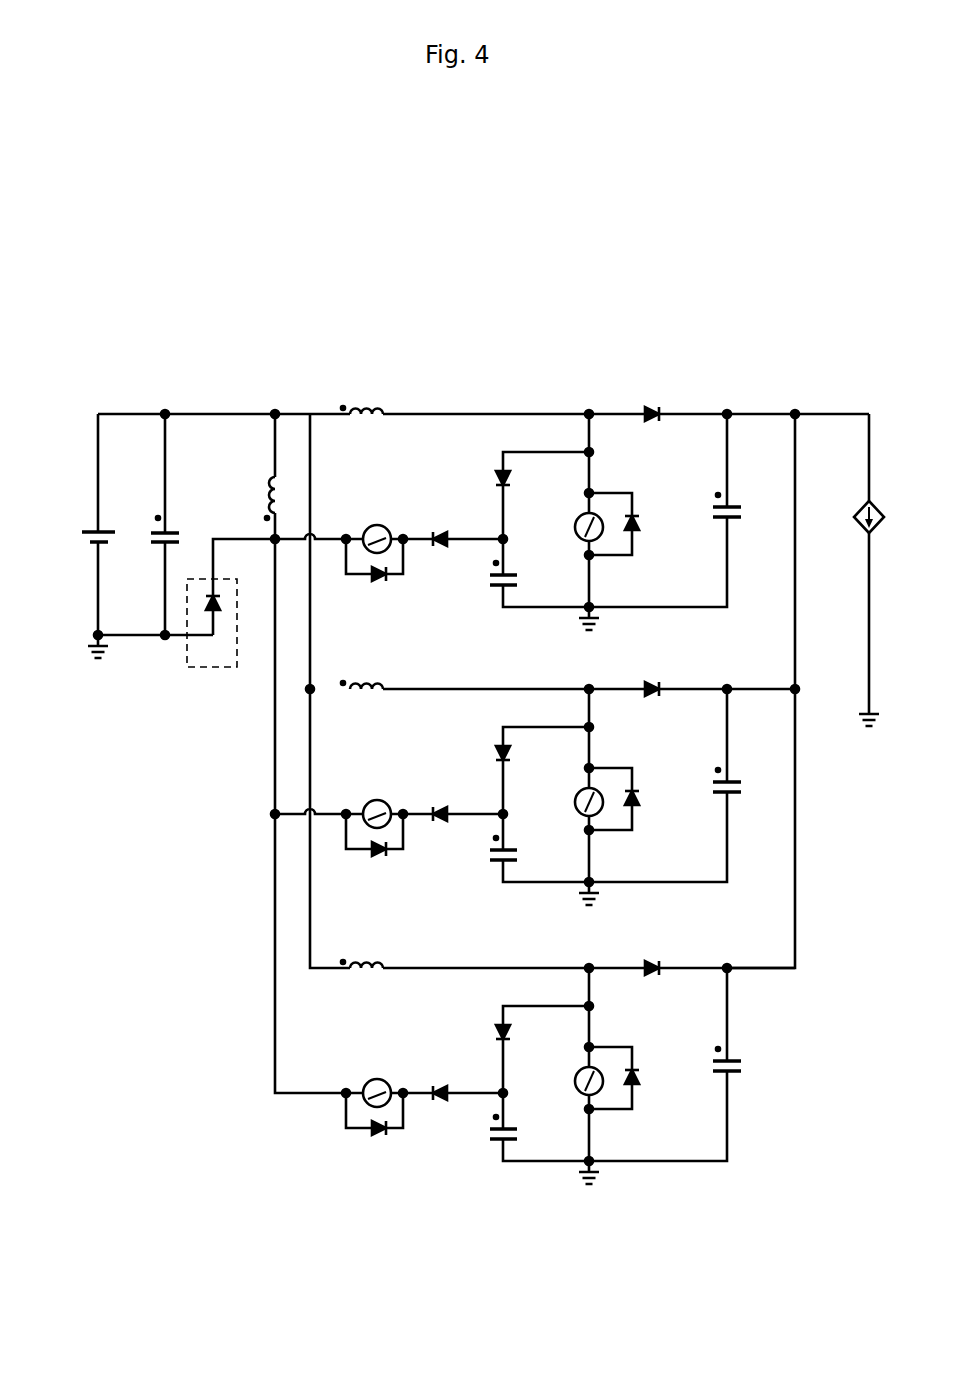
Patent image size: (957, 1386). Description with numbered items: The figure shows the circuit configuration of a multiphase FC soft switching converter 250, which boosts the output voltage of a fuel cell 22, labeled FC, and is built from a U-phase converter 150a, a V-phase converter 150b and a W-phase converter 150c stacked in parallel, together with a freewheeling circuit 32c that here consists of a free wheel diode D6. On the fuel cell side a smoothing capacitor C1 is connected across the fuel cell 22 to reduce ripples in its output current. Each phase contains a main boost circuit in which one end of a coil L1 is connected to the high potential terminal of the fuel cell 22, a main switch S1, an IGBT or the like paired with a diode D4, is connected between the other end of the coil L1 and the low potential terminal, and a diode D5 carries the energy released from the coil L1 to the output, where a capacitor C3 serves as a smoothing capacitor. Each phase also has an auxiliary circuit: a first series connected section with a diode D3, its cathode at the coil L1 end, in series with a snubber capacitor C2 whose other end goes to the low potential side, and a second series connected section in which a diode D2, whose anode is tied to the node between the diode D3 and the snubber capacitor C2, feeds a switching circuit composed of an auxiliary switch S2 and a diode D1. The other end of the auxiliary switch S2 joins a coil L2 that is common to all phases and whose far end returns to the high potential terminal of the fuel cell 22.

The multiphase FC soft switching converter 250 is at (328, 245).
The U-phase converter 150a is at (630, 274).
The V-phase converter 150b is at (618, 655).
The W-phase converter 150c is at (618, 929).
The fuel cell 22 is at (80, 560).
The fuel cell FC is at (80, 535).
The freewheeling circuit 32c is at (177, 662).
The smoothing capacitor C1 is at (173, 530).
The snubber capacitor C2 is at (500, 587).
The capacitor C3 is at (716, 519).
The coil L1 is at (384, 411).
The coil L2 is at (268, 480).
The diode D1 is at (380, 581).
The diode D2 is at (438, 532).
The diode D3 is at (508, 487).
The diode D4 is at (641, 516).
The diode D5 is at (657, 410).
The free wheel diode D6 is at (206, 601).
The main switch S1 is at (585, 538).
The auxiliary switch S2 is at (372, 525).